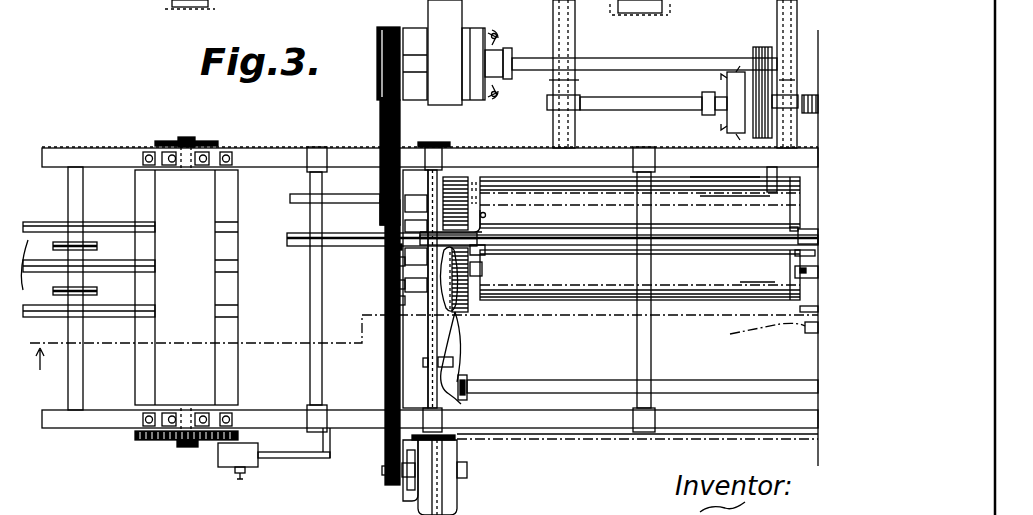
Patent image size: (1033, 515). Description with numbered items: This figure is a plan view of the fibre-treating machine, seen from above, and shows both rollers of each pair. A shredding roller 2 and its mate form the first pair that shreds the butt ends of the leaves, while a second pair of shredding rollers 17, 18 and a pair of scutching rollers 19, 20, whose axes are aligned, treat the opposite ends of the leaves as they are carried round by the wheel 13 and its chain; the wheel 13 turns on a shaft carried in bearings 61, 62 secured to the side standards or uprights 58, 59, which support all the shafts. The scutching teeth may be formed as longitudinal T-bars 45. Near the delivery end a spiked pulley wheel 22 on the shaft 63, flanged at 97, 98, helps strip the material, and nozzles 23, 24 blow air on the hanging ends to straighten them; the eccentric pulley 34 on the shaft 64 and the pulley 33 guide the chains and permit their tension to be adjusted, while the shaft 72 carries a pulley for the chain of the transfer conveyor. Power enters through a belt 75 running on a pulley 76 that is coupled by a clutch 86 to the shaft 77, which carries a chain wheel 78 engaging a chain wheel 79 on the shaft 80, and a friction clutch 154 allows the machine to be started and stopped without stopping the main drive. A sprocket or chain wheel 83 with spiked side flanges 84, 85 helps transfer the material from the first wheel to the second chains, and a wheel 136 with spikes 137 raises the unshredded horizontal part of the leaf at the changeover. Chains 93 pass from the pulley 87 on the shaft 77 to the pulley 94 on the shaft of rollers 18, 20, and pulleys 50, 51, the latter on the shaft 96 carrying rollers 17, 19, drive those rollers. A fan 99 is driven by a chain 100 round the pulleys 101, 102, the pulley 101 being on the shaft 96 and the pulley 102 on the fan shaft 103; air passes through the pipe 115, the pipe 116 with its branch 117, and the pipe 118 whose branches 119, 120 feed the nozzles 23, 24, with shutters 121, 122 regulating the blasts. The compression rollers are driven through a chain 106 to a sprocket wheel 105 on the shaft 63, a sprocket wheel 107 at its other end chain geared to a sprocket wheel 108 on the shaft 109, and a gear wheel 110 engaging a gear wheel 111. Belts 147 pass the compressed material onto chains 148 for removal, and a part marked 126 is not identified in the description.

The shredding roller 2 is at (35, 369).
The wheel 13 is at (694, 254).
The shredding roller 17 is at (757, 273).
The shredding roller 18 is at (748, 196).
The scutching roller 19 is at (640, 275).
The scutching roller 20 is at (640, 202).
The spiked or toothed pulley wheel 22 is at (399, 262).
The nozzle 23 is at (482, 272).
The nozzle 24 is at (486, 220).
The pulley 33 is at (806, 231).
The pulley 34 is at (297, 233).
The longitudinal T-bars 45 is at (412, 205).
The pulley 50 is at (458, 180).
The pulley 51 is at (466, 300).
The side standard or upright 58 is at (591, 155).
The side standard or upright 59 is at (582, 429).
The bearing 61 is at (645, 156).
The bearing 62 is at (646, 430).
The shaft 63 is at (440, 165).
The shaft 64 is at (314, 272).
The shaft 72 is at (767, 176).
The belt 75 is at (445, 52).
The pulley 76 is at (465, 30).
The shaft 77 is at (613, 60).
The chain wheel 78 is at (761, 47).
The chain wheel 79 is at (705, 177).
The shaft 80 is at (690, 110).
The sprocket or chain wheel 83 is at (795, 271).
The side flange 84 is at (800, 256).
The side flange 85 is at (800, 308).
The clutch 86 is at (500, 34).
The pulley 87 is at (377, 55).
The chains 93 is at (380, 118).
The pulley 94 is at (380, 212).
The shaft 96 is at (640, 281).
The flange 97 is at (386, 246).
The flange 98 is at (399, 284).
The fan 99 is at (454, 480).
The chain 100 is at (385, 366).
The pulley 101 is at (399, 300).
The pulley 102 is at (402, 470).
The fan shaft 103 is at (383, 467).
The sprocket wheel 105 is at (455, 440).
The chain 106 is at (720, 441).
The sprocket wheel 107 is at (437, 143).
The sprocket wheel 108 is at (205, 142).
The shaft 109 is at (176, 140).
The gear wheel 110 is at (155, 441).
The gear wheel 111 is at (197, 448).
The pipe 115 is at (466, 382).
The pipe 116 is at (591, 380).
The branch 117 is at (458, 404).
The pipe 118 is at (446, 330).
The branch 119 is at (443, 298).
The branch 120 is at (486, 250).
The shutter 121 is at (466, 390).
The shutter 122 is at (426, 367).
The main shaft 126 is at (555, 235).
The wheel 136 is at (805, 333).
The spikes 137 is at (752, 331).
The belts 147 is at (128, 262).
The chains 148 is at (26, 242).
The friction clutch 154 is at (736, 75).